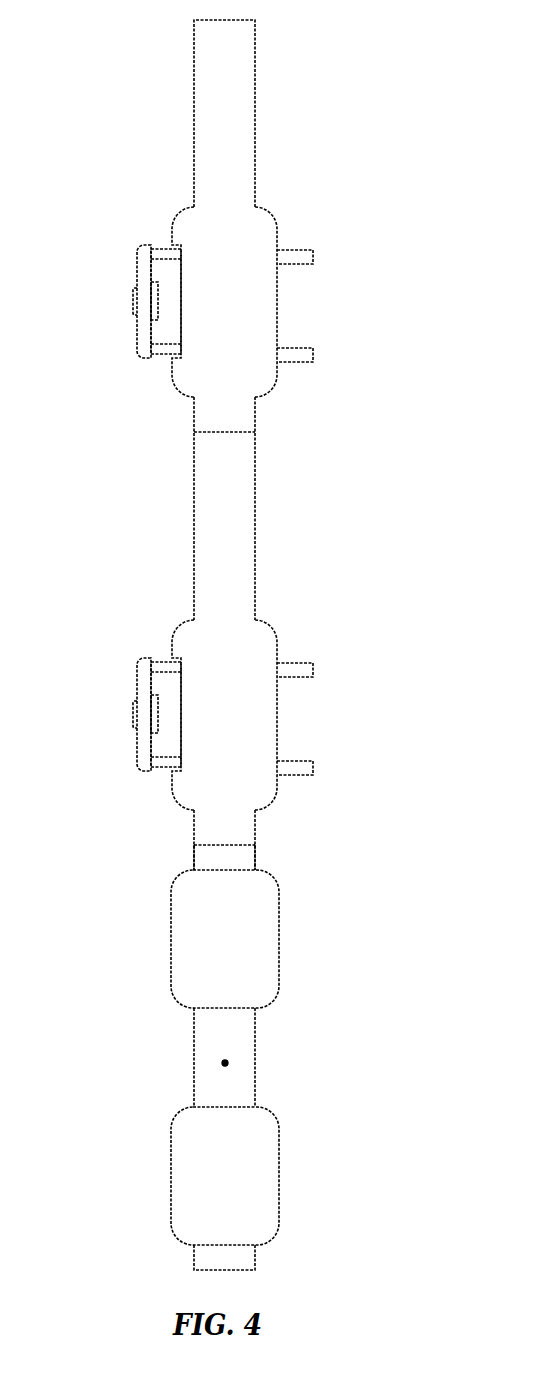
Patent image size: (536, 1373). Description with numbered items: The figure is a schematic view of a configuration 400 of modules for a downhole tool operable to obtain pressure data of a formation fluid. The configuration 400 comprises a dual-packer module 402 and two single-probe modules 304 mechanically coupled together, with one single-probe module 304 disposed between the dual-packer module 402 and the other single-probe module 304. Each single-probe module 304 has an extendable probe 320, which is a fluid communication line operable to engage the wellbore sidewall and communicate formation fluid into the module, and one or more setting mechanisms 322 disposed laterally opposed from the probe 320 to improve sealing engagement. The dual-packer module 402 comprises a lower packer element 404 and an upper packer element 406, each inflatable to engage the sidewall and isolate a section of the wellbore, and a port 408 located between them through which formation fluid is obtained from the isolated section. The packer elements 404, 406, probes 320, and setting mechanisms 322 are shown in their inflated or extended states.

The configuration of modules 400 is at (320, 65).
The single-probe module 304 is at (243, 125).
The probe 320 is at (133, 310).
The setting mechanism 322 is at (313, 260).
The dual-packer module 402 is at (255, 862).
The upper packer element 406 is at (268, 950).
The port 408 is at (228, 1063).
The lower packer element 404 is at (268, 1183).